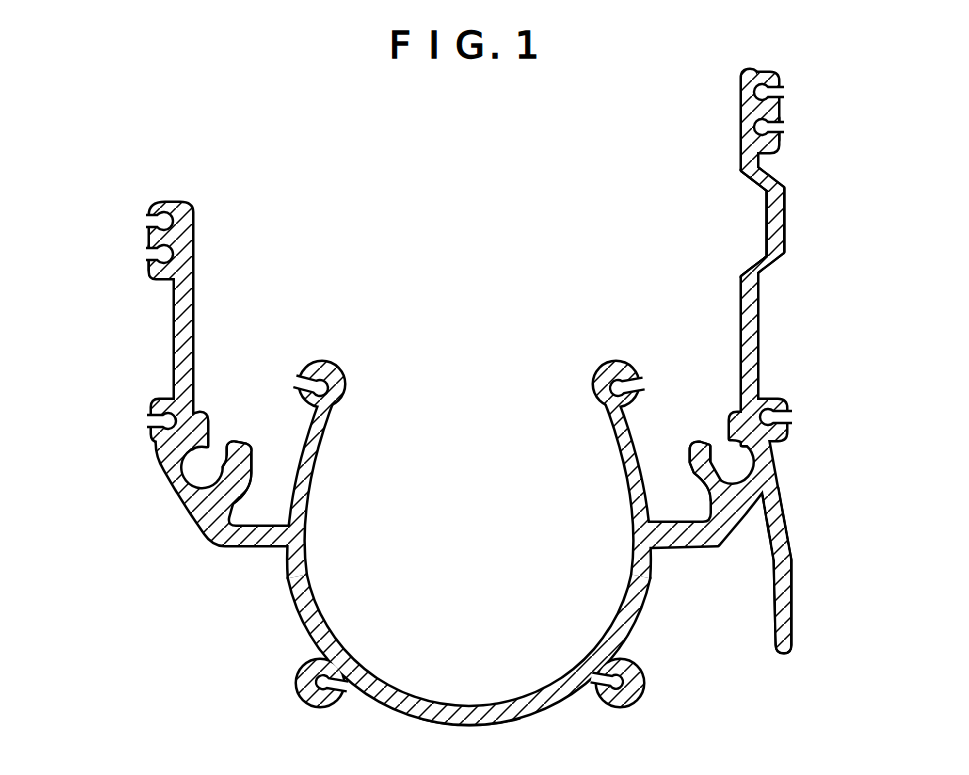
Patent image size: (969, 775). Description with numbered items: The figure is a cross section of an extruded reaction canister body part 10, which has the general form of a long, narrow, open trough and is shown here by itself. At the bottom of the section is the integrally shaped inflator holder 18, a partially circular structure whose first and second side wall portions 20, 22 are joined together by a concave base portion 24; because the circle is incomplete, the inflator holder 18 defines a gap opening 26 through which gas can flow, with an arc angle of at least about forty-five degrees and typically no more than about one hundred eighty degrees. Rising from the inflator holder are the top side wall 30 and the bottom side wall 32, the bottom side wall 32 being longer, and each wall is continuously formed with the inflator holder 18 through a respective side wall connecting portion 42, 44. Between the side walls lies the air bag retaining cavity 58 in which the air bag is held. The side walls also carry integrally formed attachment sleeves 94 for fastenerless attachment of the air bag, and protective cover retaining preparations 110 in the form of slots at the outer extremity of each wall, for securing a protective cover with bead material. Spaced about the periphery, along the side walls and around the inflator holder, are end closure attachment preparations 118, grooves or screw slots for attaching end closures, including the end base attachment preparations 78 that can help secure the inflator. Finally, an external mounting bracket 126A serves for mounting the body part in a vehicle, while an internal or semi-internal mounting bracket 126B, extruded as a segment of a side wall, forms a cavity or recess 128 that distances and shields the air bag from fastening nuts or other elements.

The reaction canister body part 10 is at (199, 122).
The inflator holder 18 is at (376, 704).
The first side wall portion 20 is at (306, 492).
The second side wall portion 22 is at (628, 474).
The concave base portion 24 is at (465, 722).
The gap opening 26 is at (438, 398).
The top side wall 30 is at (172, 200).
The bottom side wall 32 is at (762, 71).
The side wall connecting portion 42 is at (250, 540).
The side wall connecting portion 44 is at (676, 540).
The air bag retaining cavity 58 is at (438, 252).
The end base attachment preparations 78 is at (601, 364).
The attachment sleeves 94 is at (248, 468).
The protective cover retaining preparations 110 is at (156, 258).
The end closure attachment preparations 118 is at (156, 221).
The mounting bracket 126A is at (784, 607).
The mounting bracket 126B is at (787, 233).
The cavity or recess 128 is at (758, 215).